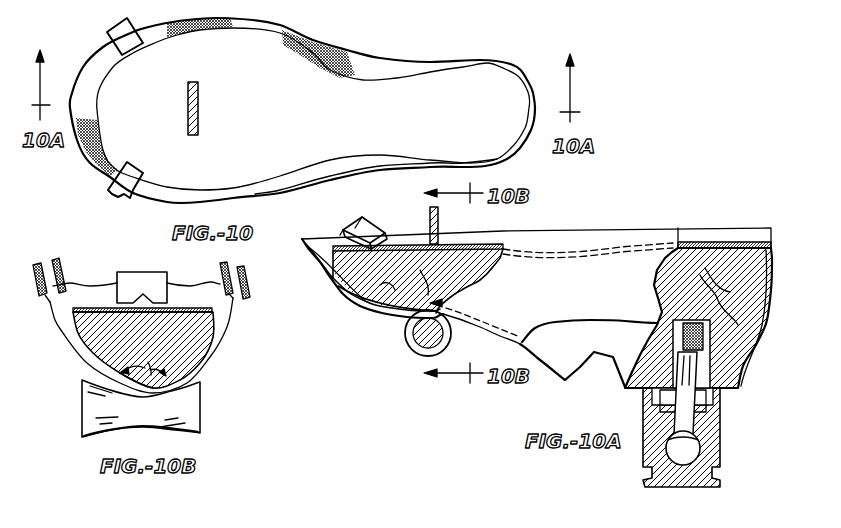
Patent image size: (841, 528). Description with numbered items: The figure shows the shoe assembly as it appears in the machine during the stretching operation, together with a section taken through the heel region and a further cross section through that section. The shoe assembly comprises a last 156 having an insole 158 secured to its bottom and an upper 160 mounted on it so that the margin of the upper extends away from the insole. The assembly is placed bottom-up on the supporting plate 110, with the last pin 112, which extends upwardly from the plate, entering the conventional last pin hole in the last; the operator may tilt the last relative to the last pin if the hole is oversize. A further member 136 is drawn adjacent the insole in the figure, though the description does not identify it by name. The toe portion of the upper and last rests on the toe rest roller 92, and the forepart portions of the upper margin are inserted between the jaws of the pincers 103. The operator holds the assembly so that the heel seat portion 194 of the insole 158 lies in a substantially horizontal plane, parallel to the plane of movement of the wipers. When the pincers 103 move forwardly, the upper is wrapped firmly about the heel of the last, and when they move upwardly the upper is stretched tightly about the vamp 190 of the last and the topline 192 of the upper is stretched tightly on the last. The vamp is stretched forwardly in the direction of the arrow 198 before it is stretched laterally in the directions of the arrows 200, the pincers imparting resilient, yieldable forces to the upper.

In FIG. 10A, the toe rest roller 92 is at (422, 332).
In FIG. 10B, the toe rest roller 92 is at (95, 407).
In FIG. 10, the pincers 103 is at (124, 30).
In FIG. 10A, the pincers 103 is at (370, 230).
In FIG. 10B, the pincers 103 is at (57, 277).
In FIG. 10A, the supporting plate 110 is at (713, 402).
In FIG. 10A, the last pin 112 is at (690, 368).
In FIG. 10, the stop block 136 is at (198, 85).
In FIG. 10A, the stop block 136 is at (438, 213).
In FIG. 10B, the stop block 136 is at (148, 280).
In FIG. 10A, the last 156 is at (560, 360).
In FIG. 10B, the last 156 is at (83, 350).
In FIG. 10, the insole 158 is at (256, 119).
In FIG. 10A, the insole 158 is at (482, 240).
In FIG. 10B, the insole 158 is at (187, 303).
In FIG. 10, the upper 160 is at (340, 57).
In FIG. 10A, the upper 160 is at (503, 320).
In FIG. 10B, the upper 160 is at (228, 315).
In FIG. 10A, the vamp 190 is at (400, 312).
In FIG. 10B, the vamp 190 is at (147, 387).
In FIG. 10A, the topline 192 is at (586, 322).
In FIG. 10, the heel seat portion 194 is at (468, 122).
In FIG. 10A, the heel seat portion 194 is at (720, 243).
In FIG. 10A, the arrow 198 is at (442, 303).
In FIG. 10B, the arrows 200 is at (143, 362).